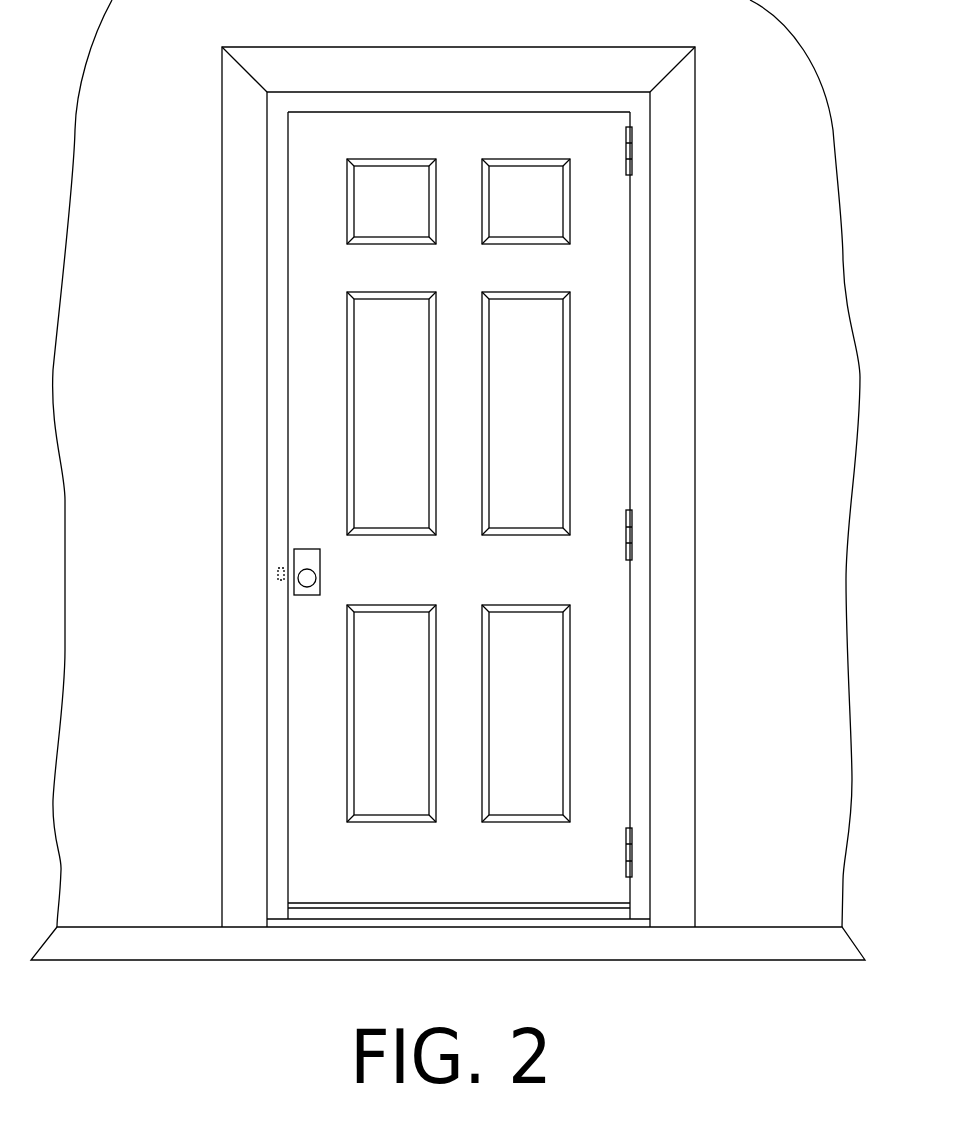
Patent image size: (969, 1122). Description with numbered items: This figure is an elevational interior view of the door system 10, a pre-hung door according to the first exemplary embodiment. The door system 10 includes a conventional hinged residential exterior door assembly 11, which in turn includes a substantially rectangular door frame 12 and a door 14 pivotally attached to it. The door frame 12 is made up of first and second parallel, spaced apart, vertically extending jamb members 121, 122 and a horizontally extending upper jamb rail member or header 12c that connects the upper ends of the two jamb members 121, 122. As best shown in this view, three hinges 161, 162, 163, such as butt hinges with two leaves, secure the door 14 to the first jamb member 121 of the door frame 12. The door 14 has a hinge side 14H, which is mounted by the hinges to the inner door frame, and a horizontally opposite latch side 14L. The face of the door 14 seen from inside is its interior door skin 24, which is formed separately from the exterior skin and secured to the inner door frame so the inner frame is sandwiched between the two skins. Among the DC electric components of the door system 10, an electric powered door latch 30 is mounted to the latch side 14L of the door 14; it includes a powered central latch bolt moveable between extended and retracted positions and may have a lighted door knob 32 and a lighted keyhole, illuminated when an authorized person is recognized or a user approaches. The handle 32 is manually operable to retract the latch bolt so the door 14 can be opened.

The door system 10 is at (448, 480).
The door assembly 11 is at (466, 466).
The door frame 12 is at (458, 466).
The header 12c is at (355, 102).
The first jamb member 121 is at (640, 657).
The second jamb member 122 is at (270, 690).
The door 14 is at (460, 515).
The latch side 14L is at (288, 223).
The hinge side 14H is at (630, 222).
The interior door skin 24 is at (305, 147).
The first hinge 161 is at (632, 533).
The second hinge 162 is at (632, 150).
The third hinge 163 is at (632, 850).
The electric powered door latch 30 is at (273, 542).
The lighted door knob 32 is at (298, 548).